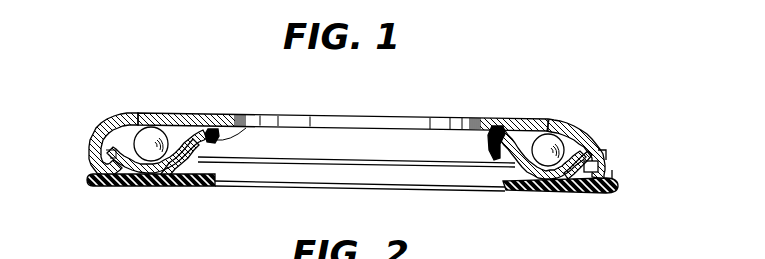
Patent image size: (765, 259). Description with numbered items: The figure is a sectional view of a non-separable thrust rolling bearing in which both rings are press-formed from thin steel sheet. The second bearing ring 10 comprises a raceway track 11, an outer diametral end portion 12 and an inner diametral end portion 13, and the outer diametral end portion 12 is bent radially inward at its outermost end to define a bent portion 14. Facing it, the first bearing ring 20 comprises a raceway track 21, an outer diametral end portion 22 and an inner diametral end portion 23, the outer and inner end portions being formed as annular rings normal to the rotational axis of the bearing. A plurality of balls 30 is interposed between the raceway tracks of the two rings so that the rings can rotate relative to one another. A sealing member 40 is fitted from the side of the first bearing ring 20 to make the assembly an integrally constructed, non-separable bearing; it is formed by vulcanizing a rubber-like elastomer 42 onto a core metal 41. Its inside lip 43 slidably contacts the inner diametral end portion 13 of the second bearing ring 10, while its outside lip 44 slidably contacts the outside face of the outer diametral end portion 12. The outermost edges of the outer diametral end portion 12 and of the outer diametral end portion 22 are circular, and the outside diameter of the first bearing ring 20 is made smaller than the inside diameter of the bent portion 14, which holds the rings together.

The second bearing ring 10 is at (571, 127).
The raceway track 11 is at (553, 122).
The outer diametral end portion 12 is at (603, 154).
The inner diametral end portion 13 is at (489, 118).
The bent portion 14 is at (603, 193).
The first bearing ring 20 is at (559, 192).
The raceway track 21 is at (543, 187).
The outer diametral end portion 22 is at (578, 190).
The inner diametral end portion 23 is at (498, 165).
The balls 30 is at (150, 138).
The sealing member 40 is at (112, 187).
The core metal 41 is at (187, 168).
The rubber-like elastomer 42 is at (155, 187).
The inside lip 43 is at (226, 137).
The outside lip 44 is at (92, 160).